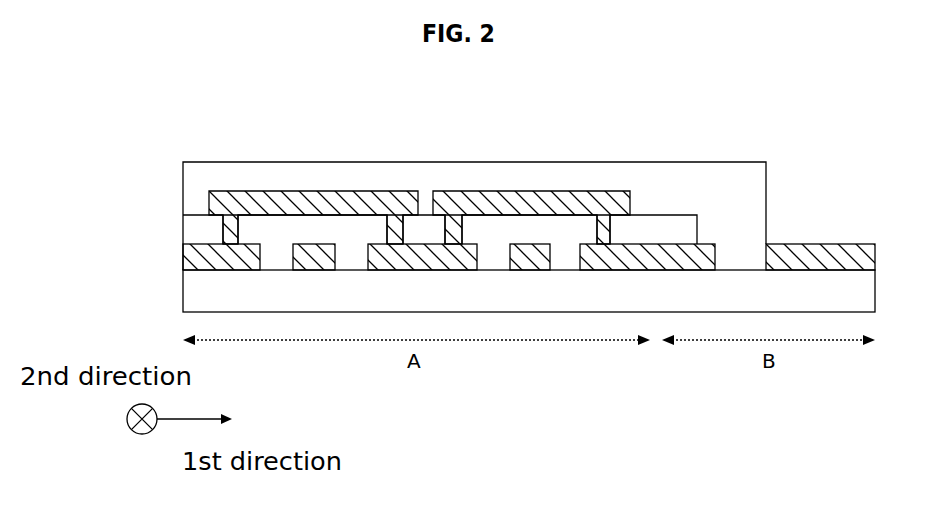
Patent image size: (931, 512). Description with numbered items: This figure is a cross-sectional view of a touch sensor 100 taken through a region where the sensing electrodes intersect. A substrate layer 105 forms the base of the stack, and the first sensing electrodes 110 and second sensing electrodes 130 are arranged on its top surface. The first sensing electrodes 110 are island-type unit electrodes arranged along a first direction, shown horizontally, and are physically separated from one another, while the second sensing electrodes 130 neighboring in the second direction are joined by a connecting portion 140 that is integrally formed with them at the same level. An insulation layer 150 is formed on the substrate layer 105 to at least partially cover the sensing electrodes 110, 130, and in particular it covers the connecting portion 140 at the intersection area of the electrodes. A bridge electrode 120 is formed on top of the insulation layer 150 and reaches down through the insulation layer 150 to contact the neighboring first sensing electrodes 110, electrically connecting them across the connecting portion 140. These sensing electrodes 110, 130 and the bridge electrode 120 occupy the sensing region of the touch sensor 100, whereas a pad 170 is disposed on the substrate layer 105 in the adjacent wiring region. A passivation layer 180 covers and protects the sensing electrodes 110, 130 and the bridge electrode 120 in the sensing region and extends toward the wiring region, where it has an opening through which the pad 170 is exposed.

The touch sensor 100 is at (173, 87).
The substrate layer 105 is at (192, 292).
The first sensing electrode 110 is at (463, 258).
The bridge electrode 120 is at (470, 200).
The second sensing electrode 130 is at (366, 315).
The connecting portion 140 is at (318, 272).
The insulation layer 150 is at (568, 222).
The pad 170 is at (822, 244).
The passivation layer 180 is at (192, 178).